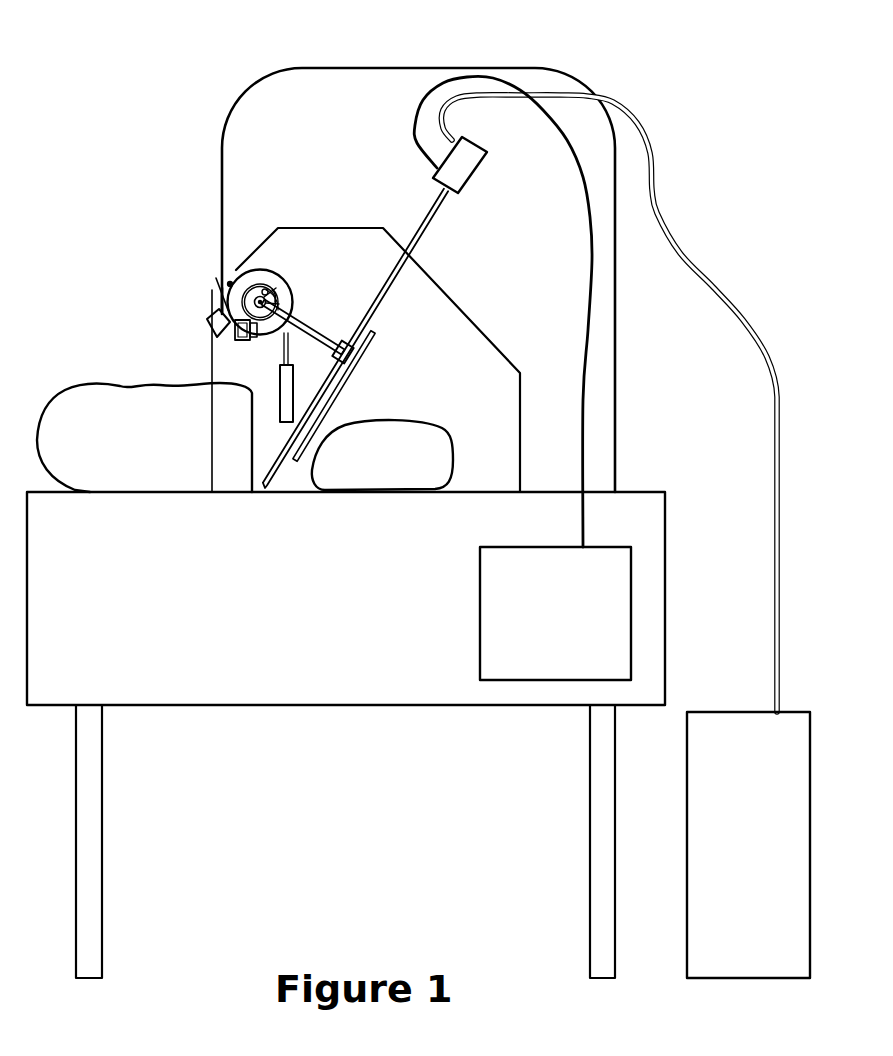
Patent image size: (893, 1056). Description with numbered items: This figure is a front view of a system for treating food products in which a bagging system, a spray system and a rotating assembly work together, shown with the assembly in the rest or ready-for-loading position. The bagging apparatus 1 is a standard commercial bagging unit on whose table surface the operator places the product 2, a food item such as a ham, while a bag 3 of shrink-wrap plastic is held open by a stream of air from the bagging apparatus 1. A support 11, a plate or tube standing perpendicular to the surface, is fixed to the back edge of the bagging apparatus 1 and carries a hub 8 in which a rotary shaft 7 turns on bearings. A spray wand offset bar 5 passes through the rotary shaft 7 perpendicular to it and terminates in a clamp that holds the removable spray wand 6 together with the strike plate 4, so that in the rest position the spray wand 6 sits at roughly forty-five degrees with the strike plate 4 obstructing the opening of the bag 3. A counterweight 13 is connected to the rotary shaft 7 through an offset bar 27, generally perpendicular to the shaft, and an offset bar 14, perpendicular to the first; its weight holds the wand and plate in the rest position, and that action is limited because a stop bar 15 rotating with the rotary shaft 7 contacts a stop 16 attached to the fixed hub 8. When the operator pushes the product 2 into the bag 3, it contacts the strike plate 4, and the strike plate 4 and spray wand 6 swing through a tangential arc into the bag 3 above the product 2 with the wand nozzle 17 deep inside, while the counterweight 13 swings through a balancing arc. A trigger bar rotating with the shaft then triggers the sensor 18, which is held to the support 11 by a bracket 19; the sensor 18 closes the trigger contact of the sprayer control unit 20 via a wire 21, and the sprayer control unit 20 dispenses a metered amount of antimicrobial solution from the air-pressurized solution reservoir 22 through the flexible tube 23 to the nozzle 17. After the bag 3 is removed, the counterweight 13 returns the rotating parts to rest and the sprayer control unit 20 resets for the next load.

The bagging apparatus 1 is at (665, 512).
The product 2 is at (452, 452).
The bag 3 is at (100, 385).
The strike plate 4 is at (355, 362).
The spray wand offset bar 5 is at (330, 335).
The spray wand 6 is at (432, 225).
The rotary shaft 7 is at (290, 300).
The hub 8 is at (258, 270).
The support 11 is at (333, 228).
The counterweight 13 is at (205, 323).
The offset bar 14 is at (222, 300).
The stop bar 15 is at (270, 290).
The stop 16 is at (272, 290).
The wand nozzle 17 is at (265, 490).
The sensor 18 is at (255, 339).
The bracket 19 is at (240, 341).
The sprayer control unit 20 is at (480, 605).
The wire 21 is at (307, 68).
The solution reservoir 22 is at (737, 712).
The flexible tube 23 is at (742, 320).
The offset bar 27 is at (226, 282).